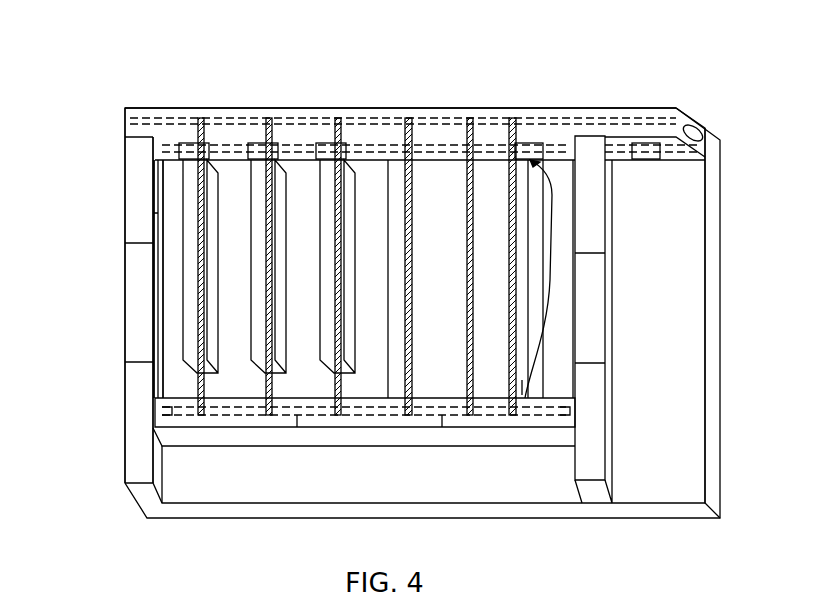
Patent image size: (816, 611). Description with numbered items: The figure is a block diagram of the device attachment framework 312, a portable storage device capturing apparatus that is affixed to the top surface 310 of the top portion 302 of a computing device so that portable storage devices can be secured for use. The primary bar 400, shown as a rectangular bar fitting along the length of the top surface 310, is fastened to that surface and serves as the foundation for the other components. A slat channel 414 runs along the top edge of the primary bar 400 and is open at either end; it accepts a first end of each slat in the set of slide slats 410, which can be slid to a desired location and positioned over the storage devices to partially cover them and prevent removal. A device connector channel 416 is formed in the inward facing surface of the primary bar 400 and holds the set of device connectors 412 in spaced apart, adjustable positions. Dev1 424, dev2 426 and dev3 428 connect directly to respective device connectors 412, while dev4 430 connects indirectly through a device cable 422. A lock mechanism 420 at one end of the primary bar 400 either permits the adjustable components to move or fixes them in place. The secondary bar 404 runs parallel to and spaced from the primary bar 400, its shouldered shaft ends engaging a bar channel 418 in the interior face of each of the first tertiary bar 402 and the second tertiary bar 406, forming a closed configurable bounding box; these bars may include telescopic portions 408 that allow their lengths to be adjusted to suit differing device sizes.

The device attachment framework 312 is at (128, 43).
The top portion 302 is at (720, 282).
The top surface 310 is at (700, 240).
The primary bar 400 is at (170, 107).
The first tertiary bar 402 is at (128, 279).
The secondary bar 404 is at (160, 450).
The second tertiary bar 406 is at (592, 466).
The set of telescopic portions 408 is at (135, 412).
The set of slide slats 410 is at (200, 118).
The set of device connectors 412 is at (182, 150).
The slat channel 414 is at (437, 118).
The device connector channel 416 is at (375, 150).
The bar channel 418 is at (160, 215).
The lock mechanism 420 is at (703, 128).
The device cable 422 is at (551, 185).
The dev1 424 is at (210, 353).
The dev2 426 is at (278, 353).
The dev3 428 is at (347, 353).
The dev4 430 is at (522, 393).